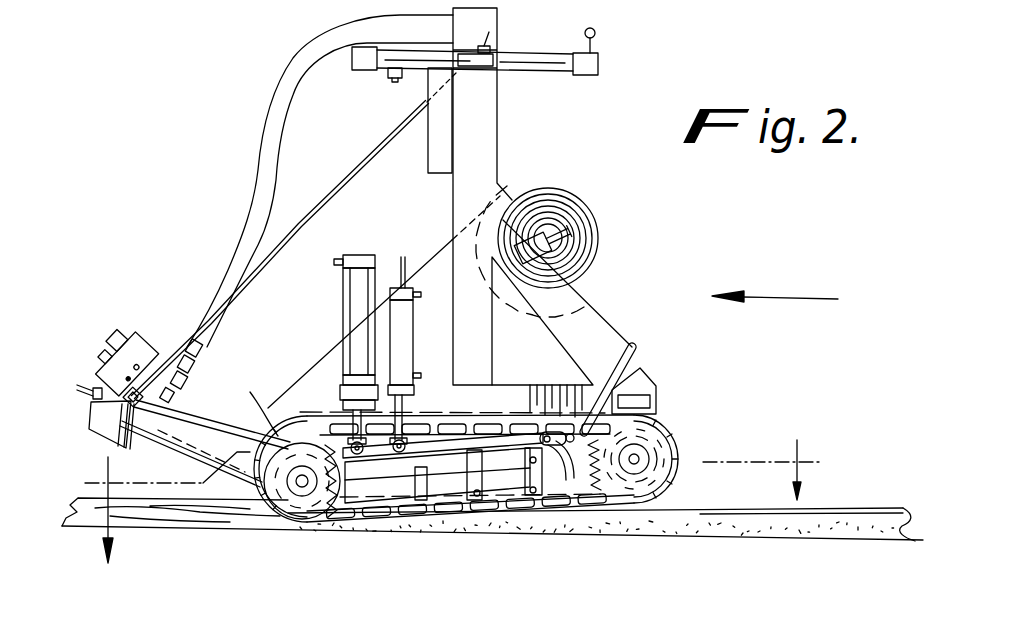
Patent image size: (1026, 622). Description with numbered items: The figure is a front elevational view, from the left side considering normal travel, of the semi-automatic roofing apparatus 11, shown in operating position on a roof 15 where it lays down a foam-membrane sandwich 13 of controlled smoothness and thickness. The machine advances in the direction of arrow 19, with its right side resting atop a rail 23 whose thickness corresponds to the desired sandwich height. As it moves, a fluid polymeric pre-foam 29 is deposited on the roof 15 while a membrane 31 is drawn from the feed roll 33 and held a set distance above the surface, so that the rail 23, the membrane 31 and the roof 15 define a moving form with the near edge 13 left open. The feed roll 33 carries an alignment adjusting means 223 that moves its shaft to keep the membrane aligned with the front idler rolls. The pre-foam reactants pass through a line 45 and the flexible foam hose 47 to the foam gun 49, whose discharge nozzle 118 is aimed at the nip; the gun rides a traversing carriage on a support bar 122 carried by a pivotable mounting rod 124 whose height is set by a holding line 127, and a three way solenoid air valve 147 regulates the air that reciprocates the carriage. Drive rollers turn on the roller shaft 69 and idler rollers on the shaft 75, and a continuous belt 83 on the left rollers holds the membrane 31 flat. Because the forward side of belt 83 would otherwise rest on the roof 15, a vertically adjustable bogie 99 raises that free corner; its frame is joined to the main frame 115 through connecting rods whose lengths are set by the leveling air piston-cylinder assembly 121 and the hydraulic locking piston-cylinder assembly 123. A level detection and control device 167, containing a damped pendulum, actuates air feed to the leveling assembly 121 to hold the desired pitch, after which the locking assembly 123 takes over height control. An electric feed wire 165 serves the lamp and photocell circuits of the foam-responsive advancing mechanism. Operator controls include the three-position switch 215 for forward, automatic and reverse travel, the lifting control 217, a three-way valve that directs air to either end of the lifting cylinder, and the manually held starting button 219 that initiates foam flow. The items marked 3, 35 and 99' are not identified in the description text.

The section line 3- 3 is at (451, 501).
The semi-automatic apparatus 11 is at (503, 113).
The foam-membrane sandwich 13 is at (857, 500).
The roof surface 15 is at (916, 508).
The arrow 19 is at (817, 296).
The rail 23 is at (203, 524).
The pre-foam 29 is at (197, 453).
The membrane 31 is at (437, 258).
The feed roll 33 is at (587, 230).
The slab bottom 35 is at (682, 528).
The line 45 is at (467, 32).
The foam hose 47 is at (268, 104).
The foam gun 49 is at (124, 433).
The roller shaft 69 is at (669, 440).
The shaft 75 is at (279, 406).
The continuous belt 83 is at (298, 392).
The bogie 99 is at (497, 458).
The track assembly (other side) 99' is at (243, 9).
The main frame 115 is at (480, 353).
The discharge nozzle 118 is at (187, 410).
The leveling air piston-cylinder assembly 121 is at (342, 262).
The support bar 122 is at (163, 406).
The hydraulic locking piston-cylinder assembly 123 is at (402, 320).
The pivotable mounting rod 124 is at (106, 10).
The holding line 127 is at (361, 163).
The three way solenoid air valve 147 is at (143, 340).
The electric feed wire 165 is at (643, 348).
The level detection and control device 167 is at (430, 168).
The switch 215 is at (490, 46).
The lifting control 217 is at (605, 44).
The starting button 219 is at (396, 82).
The alignment adjusting means 223 is at (560, 190).